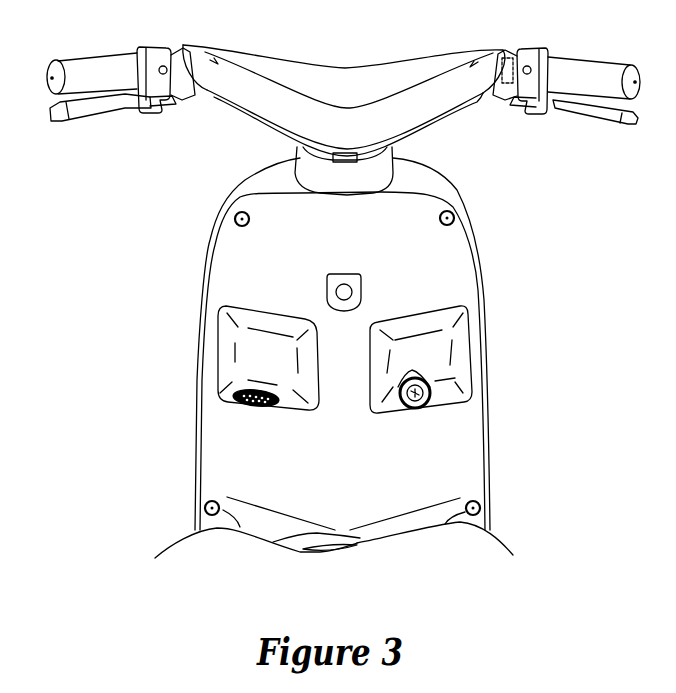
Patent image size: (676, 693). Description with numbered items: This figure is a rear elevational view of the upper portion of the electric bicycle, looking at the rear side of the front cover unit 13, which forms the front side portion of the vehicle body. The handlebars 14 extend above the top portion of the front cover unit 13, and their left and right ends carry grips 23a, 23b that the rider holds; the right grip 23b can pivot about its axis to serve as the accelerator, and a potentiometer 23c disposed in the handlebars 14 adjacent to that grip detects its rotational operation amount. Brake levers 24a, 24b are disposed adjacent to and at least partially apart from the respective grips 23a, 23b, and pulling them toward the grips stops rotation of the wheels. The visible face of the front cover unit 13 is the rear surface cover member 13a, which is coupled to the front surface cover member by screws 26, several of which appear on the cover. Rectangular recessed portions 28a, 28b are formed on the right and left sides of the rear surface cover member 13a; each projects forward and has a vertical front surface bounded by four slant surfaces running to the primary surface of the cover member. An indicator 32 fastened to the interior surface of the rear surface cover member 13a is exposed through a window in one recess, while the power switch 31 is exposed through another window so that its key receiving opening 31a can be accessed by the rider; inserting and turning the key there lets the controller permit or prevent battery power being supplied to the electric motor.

The front cover unit 13 is at (483, 256).
The rear surface cover member 13a is at (467, 275).
The handlebars 14 is at (345, 77).
The grip 23a is at (96, 62).
The grip 23b is at (577, 68).
The potentiometer 23c is at (509, 57).
The brake lever 24a is at (73, 115).
The brake lever 24b is at (607, 118).
The screw 26 is at (234, 219).
The recessed portion 28a is at (243, 345).
The recessed portion 28b is at (443, 352).
The power switch 31 is at (440, 407).
The key receiving opening 31a is at (405, 402).
The indicator 32 is at (257, 407).